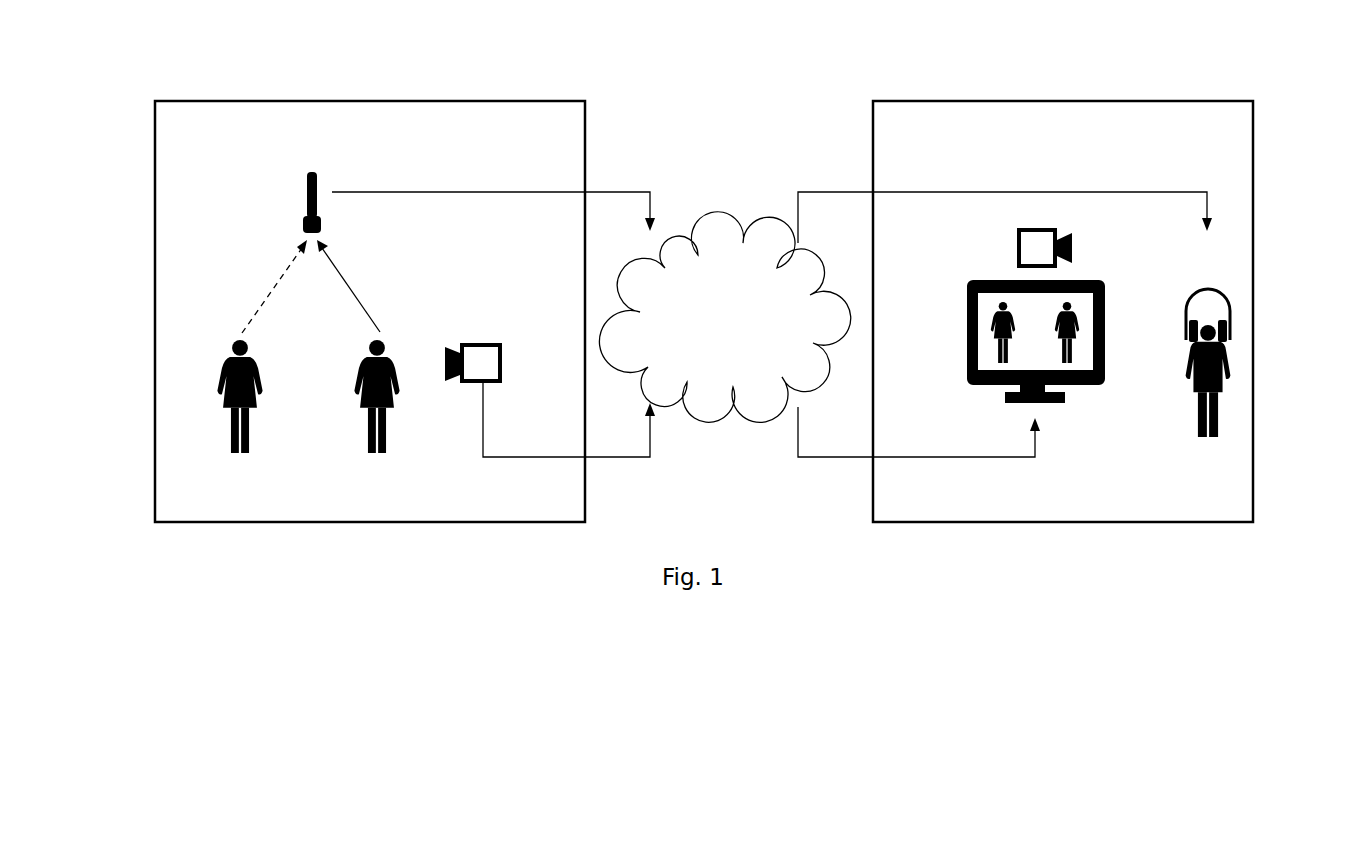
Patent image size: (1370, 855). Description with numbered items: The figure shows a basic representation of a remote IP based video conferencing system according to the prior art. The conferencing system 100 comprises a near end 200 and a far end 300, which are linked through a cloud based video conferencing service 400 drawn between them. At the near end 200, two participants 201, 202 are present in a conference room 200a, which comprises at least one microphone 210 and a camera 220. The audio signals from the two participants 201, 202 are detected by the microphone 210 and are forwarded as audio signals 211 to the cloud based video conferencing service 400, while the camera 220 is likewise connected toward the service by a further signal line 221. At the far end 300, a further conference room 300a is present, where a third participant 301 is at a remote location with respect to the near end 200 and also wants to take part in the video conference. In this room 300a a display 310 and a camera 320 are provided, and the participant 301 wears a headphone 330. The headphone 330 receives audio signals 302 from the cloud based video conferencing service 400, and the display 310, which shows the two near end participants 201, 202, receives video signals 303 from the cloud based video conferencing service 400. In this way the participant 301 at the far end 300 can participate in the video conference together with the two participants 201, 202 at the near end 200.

The conferencing system 100 is at (742, 35).
The near end 200 is at (370, 290).
The room 200a is at (499, 130).
The participant 201 is at (993, 320).
The participant 202 is at (1130, 397).
The microphone 210 is at (312, 183).
The audio signals 211 is at (493, 195).
The camera 220 is at (473, 346).
The video signal to network 221 is at (569, 420).
The far end 300 is at (1063, 290).
The far end room 300a is at (1191, 130).
The participant 301 is at (1222, 352).
The audio signals 302 is at (1005, 196).
The video signals 303 is at (919, 432).
The display 310 is at (967, 290).
The camera 320 is at (1072, 248).
The headphone 330 is at (1220, 296).
The cloud based video conferencing service 400 is at (724, 317).